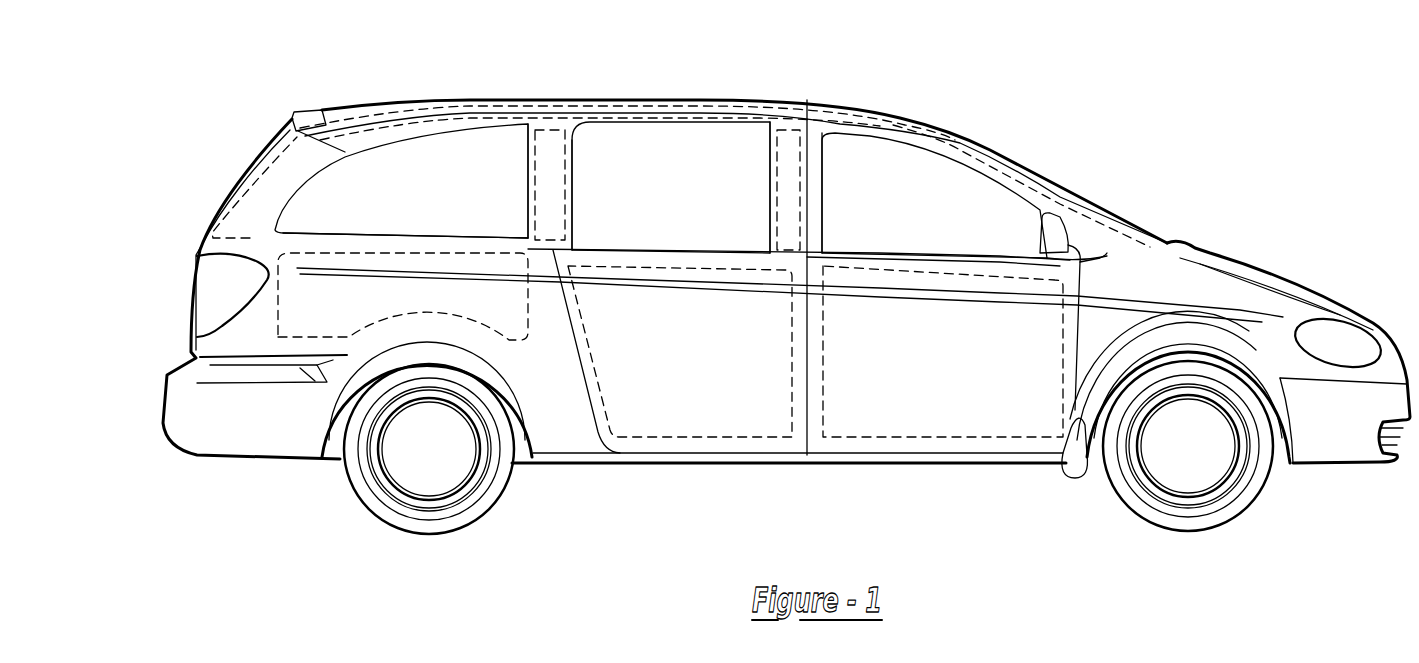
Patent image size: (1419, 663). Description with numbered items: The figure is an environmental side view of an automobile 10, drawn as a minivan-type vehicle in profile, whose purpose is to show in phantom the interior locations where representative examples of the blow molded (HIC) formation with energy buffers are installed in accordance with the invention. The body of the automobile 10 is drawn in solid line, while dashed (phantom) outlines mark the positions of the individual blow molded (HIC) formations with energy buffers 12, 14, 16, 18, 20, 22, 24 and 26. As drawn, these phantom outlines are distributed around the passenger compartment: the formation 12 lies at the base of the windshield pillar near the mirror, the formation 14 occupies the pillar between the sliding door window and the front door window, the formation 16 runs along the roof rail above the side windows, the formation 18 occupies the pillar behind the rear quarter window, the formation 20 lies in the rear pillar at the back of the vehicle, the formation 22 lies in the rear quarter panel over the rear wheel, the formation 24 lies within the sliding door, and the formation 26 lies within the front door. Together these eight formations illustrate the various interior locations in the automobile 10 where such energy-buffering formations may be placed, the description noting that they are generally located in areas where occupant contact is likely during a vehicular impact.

The automobile 10 is at (1132, 124).
The blow molded (HIC) formation with energy buffers 12 is at (1115, 256).
The blow molded (HIC) formation with energy buffers 14 is at (763, 167).
The blow molded (HIC) formation with energy buffers 16 is at (668, 100).
The blow molded (HIC) formation with energy buffers 18 is at (528, 152).
The blow molded (HIC) formation with energy buffers 20 is at (237, 185).
The blow molded (HIC) formation with energy buffers 22 is at (527, 337).
The blow molded (HIC) formation with energy buffers 24 is at (703, 437).
The blow molded (HIC) formation with energy buffers 26 is at (960, 437).